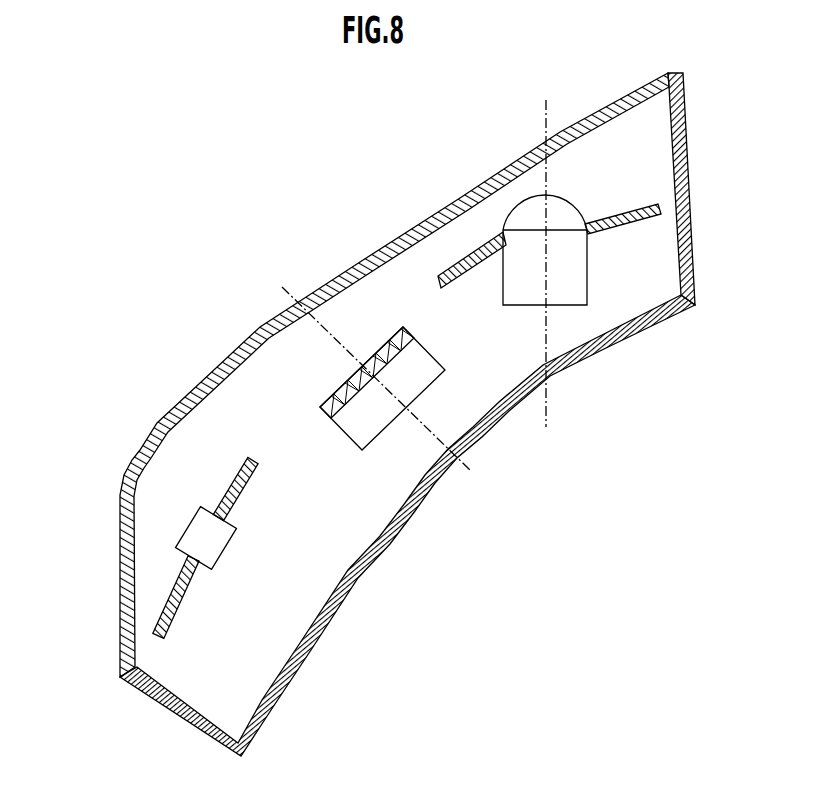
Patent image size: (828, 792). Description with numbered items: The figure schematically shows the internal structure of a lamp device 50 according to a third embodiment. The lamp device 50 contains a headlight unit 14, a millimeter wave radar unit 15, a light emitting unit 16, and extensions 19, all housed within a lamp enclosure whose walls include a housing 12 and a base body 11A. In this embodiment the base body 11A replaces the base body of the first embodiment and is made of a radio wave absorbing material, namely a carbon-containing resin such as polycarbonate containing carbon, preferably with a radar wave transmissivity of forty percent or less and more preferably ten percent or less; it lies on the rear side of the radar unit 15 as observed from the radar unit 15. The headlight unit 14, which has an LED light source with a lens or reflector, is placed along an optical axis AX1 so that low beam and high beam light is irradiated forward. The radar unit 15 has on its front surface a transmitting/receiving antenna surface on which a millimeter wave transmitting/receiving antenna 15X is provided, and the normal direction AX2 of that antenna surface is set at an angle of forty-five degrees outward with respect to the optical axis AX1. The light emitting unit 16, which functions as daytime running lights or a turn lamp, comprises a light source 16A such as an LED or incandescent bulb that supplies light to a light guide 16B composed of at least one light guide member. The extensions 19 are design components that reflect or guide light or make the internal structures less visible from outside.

The lamp device 50 is at (230, 174).
The housing 12 is at (403, 232).
The base body 11A is at (340, 603).
The optical axis AX1 is at (521, 263).
The normal direction AX2 is at (369, 367).
The headlight unit 14 is at (588, 303).
The extensions 19 is at (470, 256).
The radar unit 15 is at (383, 380).
The millimeter wave transmitting/receiving antenna 15X is at (383, 345).
The light emitting unit 16 is at (154, 486).
The light source 16A is at (203, 530).
The light guide 16B is at (237, 497).